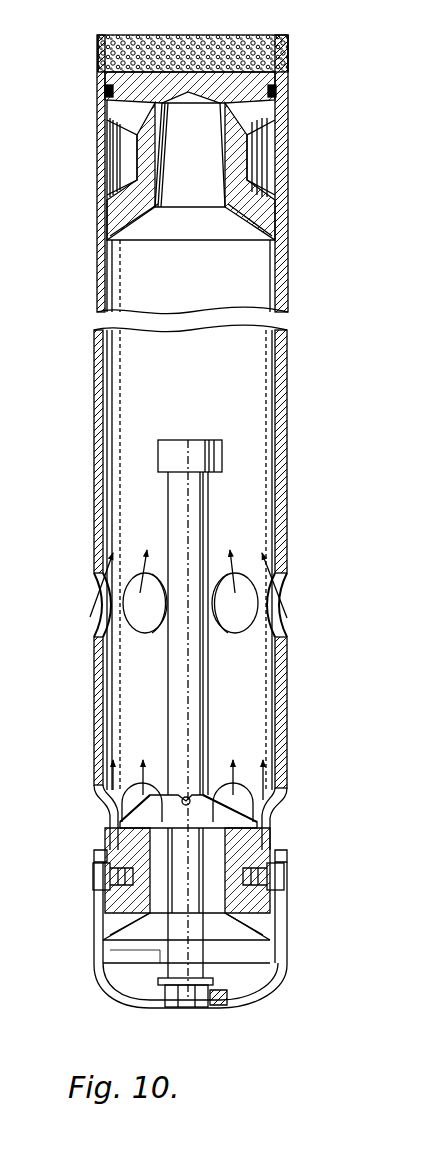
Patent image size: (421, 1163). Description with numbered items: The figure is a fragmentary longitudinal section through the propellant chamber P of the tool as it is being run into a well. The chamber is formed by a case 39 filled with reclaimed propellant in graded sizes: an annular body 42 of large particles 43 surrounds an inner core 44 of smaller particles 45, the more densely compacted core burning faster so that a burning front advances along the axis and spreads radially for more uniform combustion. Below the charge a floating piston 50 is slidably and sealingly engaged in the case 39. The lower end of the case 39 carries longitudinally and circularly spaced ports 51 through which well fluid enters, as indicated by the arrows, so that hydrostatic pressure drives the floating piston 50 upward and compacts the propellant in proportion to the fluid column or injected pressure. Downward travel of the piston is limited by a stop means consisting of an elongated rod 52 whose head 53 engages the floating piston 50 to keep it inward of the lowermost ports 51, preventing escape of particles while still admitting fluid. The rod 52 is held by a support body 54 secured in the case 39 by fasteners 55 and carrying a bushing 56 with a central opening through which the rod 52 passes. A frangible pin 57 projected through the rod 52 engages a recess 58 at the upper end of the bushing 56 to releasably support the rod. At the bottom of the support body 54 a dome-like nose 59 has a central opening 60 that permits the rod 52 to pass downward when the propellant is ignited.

The case 39 is at (288, 124).
The annular body 42 is at (97, 62).
The large particles 43 is at (98, 36).
The inner core 44 is at (160, 76).
The smaller particles 45 is at (217, 100).
The floating piston 50 is at (133, 163).
The ports 51 is at (132, 610).
The rod 52 is at (170, 699).
The head 53 is at (184, 454).
The support body 54 is at (118, 912).
The fasteners 55 is at (93, 878).
The bushing 56 is at (172, 848).
The frangible pin 57 is at (191, 808).
The recess 58 is at (186, 796).
The dome-like nose 59 is at (250, 986).
The central opening 60 is at (213, 1006).
The propellant chamber P is at (289, 60).